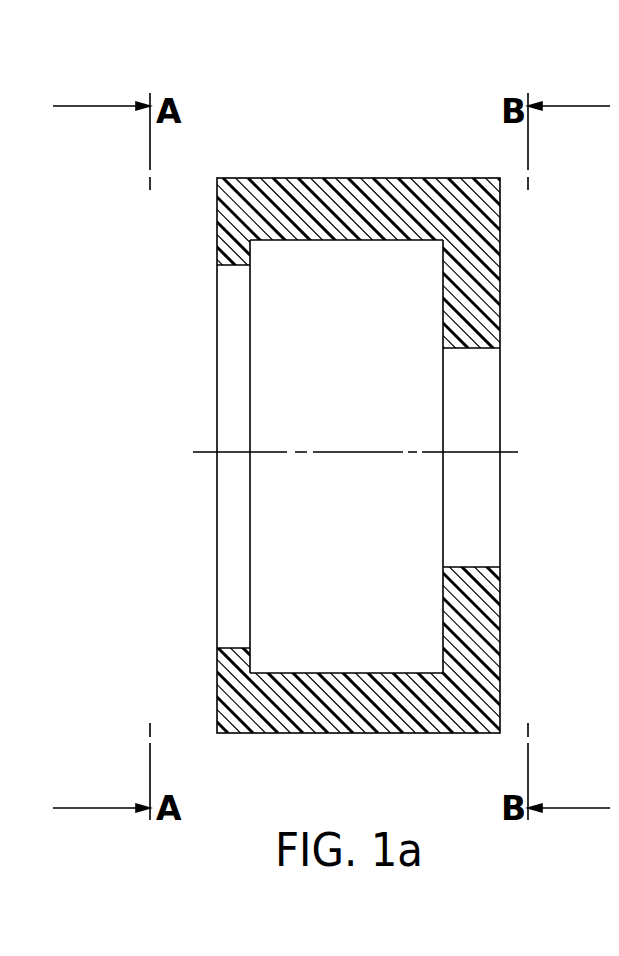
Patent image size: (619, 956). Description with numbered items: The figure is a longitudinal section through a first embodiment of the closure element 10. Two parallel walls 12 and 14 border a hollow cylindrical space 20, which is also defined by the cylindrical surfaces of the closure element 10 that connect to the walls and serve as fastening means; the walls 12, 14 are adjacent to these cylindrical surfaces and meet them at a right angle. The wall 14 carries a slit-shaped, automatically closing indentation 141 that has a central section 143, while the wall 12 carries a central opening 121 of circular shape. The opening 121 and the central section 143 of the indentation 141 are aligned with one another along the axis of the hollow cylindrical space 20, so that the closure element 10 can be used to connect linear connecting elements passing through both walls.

The closure element 10 is at (333, 177).
The wall 12 is at (492, 310).
The central opening 121 is at (485, 405).
The wall 14 is at (225, 243).
The slit-shaped indentation 141 is at (237, 325).
The central section 143 is at (230, 452).
The hollow cylindrical space 20 is at (362, 320).